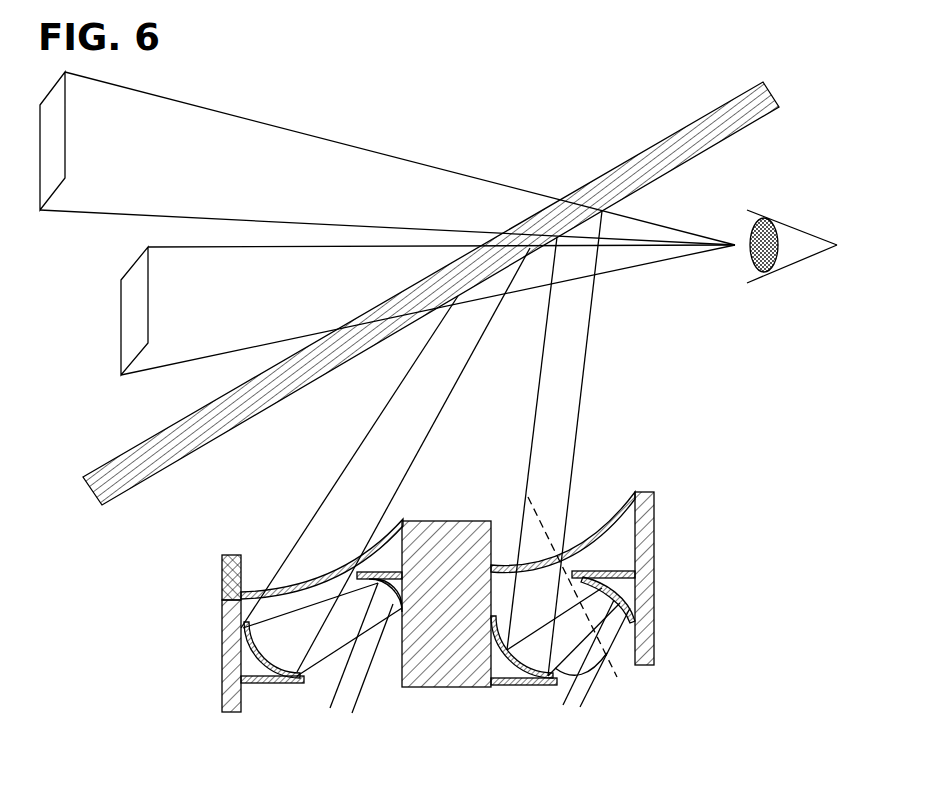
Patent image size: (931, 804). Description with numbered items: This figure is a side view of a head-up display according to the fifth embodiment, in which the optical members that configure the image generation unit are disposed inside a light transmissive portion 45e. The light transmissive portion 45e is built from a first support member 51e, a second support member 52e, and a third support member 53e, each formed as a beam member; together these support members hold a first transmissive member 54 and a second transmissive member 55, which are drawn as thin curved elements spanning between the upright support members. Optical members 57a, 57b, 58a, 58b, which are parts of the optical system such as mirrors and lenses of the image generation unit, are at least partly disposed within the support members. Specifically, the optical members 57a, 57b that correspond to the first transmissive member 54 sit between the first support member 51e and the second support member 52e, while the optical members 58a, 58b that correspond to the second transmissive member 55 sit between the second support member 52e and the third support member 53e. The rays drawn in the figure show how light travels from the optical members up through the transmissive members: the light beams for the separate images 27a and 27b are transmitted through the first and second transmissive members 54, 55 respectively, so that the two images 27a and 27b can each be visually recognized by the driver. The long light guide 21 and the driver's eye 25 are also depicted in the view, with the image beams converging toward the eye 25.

The light guide plate / rod 21 is at (703, 114).
The eye of observer 25 is at (792, 227).
The image 27a is at (54, 142).
The image 27b is at (140, 305).
The light transmissive portion 45e is at (504, 496).
The first support member 51e is at (228, 555).
The second support member 52e is at (440, 521).
The third support member 53e is at (637, 492).
The first transmissive member 54 is at (305, 582).
The second transmissive member 55 is at (583, 530).
The optical member 57a is at (272, 675).
The optical member 57b is at (392, 604).
The optical member 58a is at (523, 678).
The optical member 58b is at (623, 617).